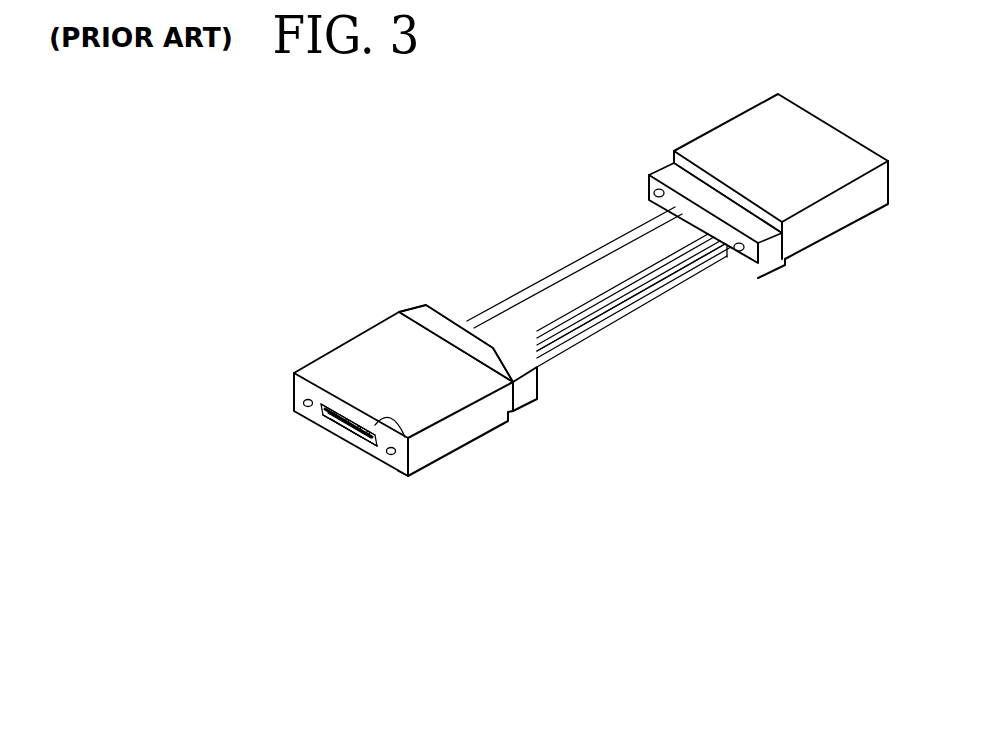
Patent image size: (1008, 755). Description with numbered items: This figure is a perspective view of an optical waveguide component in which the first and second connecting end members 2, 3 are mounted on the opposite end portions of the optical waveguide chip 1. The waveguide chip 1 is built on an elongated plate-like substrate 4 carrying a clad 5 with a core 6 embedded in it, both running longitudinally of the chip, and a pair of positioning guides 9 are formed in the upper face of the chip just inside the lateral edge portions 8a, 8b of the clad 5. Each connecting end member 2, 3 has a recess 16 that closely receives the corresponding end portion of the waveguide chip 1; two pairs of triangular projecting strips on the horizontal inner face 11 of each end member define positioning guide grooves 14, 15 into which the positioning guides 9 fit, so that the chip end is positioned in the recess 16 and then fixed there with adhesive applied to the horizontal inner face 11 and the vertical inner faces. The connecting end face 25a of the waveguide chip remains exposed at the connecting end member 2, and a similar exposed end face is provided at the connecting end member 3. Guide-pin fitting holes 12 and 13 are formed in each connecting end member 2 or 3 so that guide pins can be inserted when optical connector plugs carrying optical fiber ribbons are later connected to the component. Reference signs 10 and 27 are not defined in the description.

The optical waveguide chip 1 is at (486, 189).
The connecting end member 2 is at (412, 408).
The connecting end member 3 is at (836, 140).
The substrate 4 is at (654, 306).
The clad 5 is at (682, 273).
The core 6 is at (341, 394).
The lateral edge portion 8a is at (377, 452).
The lateral edge portion 8b is at (325, 408).
The positioning guides 9 is at (326, 422).
The insulating film 10 is at (334, 432).
The horizontal inner face 11 is at (351, 402).
The guide-pin fitting hole 12 is at (390, 466).
The guide-pin fitting hole 13 is at (301, 397).
The positioning guide groove 14 is at (425, 472).
The positioning guide groove 15 is at (659, 183).
The recess 16 is at (349, 455).
The connecting end face 25a is at (346, 440).
The locking ledge 27 is at (443, 332).